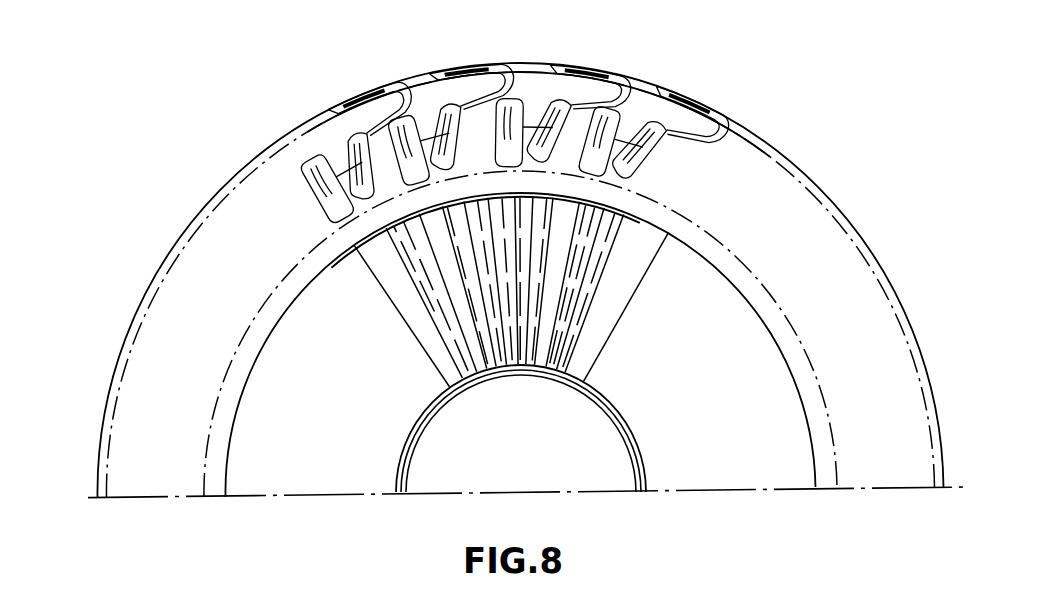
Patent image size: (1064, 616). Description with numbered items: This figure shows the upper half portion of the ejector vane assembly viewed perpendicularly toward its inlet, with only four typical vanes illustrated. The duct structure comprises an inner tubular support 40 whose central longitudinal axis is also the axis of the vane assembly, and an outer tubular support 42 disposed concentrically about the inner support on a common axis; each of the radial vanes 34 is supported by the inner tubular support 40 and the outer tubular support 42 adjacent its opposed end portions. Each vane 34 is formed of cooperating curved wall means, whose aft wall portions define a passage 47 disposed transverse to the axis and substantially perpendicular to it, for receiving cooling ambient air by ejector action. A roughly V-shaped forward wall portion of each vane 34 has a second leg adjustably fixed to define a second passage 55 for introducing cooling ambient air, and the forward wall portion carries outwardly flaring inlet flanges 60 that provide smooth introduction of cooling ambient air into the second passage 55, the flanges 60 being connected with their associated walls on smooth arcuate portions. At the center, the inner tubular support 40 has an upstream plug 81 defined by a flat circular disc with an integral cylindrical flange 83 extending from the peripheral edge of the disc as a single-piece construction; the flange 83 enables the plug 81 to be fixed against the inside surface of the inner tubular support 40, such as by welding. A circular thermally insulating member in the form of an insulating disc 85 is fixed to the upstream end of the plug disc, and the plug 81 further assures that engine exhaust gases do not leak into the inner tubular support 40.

The radial vanes 34 is at (450, 290).
The inner tubular support 40 is at (638, 473).
The outer tubular support 42 is at (637, 102).
The passage 47 is at (390, 97).
The second passage 55 is at (345, 170).
The outwardly flaring inlet flanges 60 is at (342, 172).
The upstream plug 81 is at (414, 471).
The cylindrical flange 83 is at (638, 473).
The insulating disc 85 is at (528, 455).